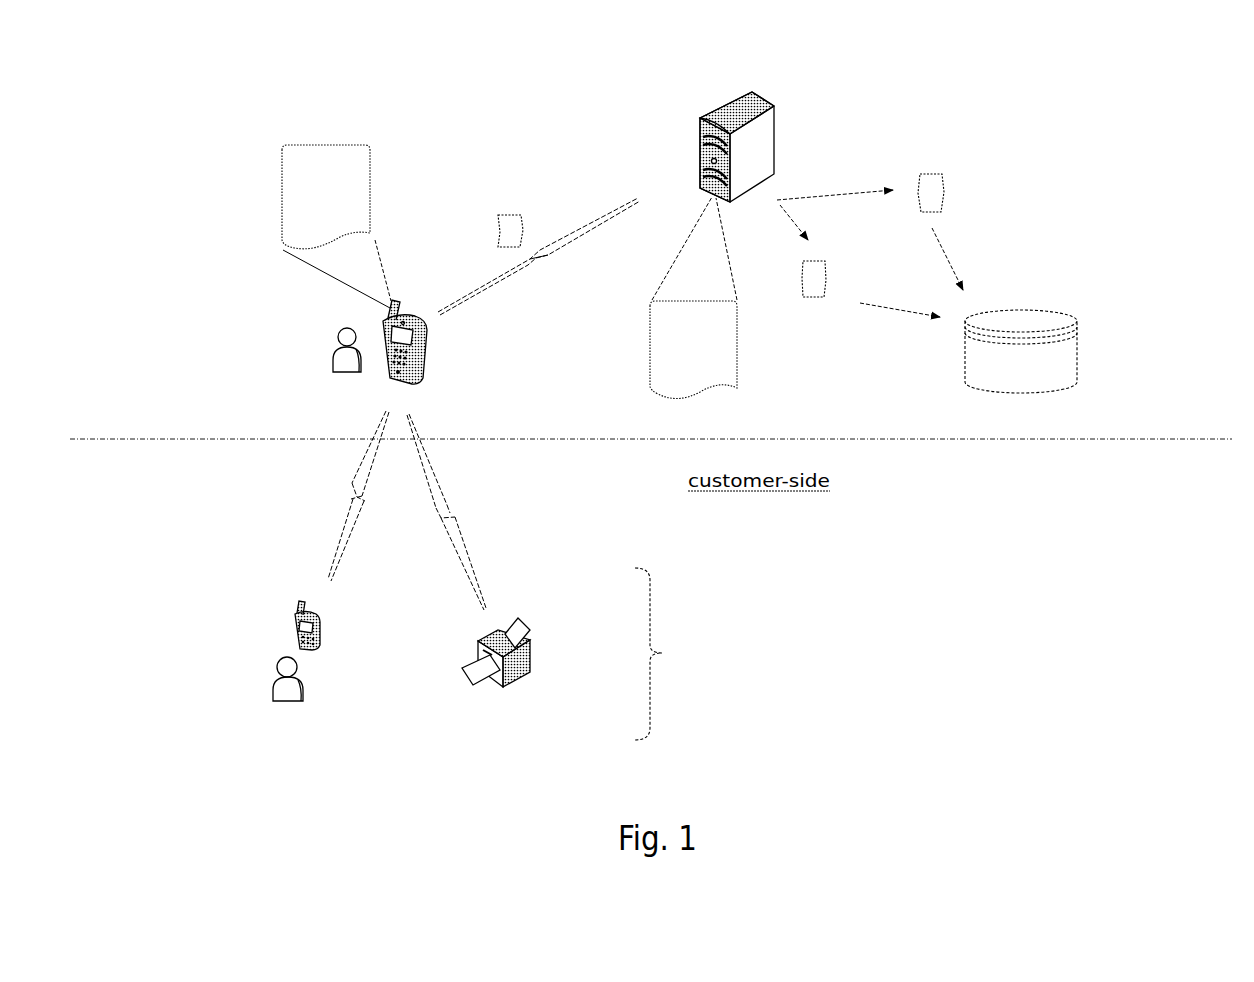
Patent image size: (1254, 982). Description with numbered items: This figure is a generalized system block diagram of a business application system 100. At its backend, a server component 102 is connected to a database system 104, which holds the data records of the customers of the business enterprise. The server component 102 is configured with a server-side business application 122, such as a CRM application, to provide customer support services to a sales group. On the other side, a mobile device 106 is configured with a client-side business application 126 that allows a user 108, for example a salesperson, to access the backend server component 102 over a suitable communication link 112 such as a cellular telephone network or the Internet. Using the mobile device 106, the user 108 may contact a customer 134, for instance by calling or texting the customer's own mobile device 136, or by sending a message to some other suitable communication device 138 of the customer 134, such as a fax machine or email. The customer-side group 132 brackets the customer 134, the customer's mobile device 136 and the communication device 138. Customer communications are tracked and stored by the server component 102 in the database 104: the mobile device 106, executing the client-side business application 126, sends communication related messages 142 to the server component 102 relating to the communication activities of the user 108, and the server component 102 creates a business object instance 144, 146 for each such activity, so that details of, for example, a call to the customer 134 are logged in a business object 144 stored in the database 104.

The business application system 100 is at (964, 63).
The server component 102 is at (777, 140).
The database system 104 is at (1080, 350).
The mobile device 106 is at (428, 360).
The user 108 is at (330, 355).
The communication link 112 is at (490, 285).
The server-side business application 122 is at (652, 380).
The client-side business application 126 is at (282, 172).
The customer-side devices 132 is at (669, 654).
The customer 134 is at (307, 690).
The mobile device 136 is at (292, 626).
The communication device 138 is at (535, 660).
The communication related messages 142 is at (495, 236).
The business object instance 144 is at (828, 277).
The business object instance 146 is at (945, 200).